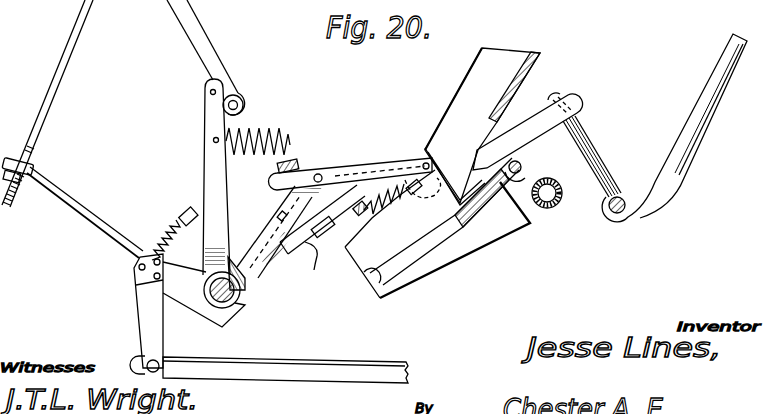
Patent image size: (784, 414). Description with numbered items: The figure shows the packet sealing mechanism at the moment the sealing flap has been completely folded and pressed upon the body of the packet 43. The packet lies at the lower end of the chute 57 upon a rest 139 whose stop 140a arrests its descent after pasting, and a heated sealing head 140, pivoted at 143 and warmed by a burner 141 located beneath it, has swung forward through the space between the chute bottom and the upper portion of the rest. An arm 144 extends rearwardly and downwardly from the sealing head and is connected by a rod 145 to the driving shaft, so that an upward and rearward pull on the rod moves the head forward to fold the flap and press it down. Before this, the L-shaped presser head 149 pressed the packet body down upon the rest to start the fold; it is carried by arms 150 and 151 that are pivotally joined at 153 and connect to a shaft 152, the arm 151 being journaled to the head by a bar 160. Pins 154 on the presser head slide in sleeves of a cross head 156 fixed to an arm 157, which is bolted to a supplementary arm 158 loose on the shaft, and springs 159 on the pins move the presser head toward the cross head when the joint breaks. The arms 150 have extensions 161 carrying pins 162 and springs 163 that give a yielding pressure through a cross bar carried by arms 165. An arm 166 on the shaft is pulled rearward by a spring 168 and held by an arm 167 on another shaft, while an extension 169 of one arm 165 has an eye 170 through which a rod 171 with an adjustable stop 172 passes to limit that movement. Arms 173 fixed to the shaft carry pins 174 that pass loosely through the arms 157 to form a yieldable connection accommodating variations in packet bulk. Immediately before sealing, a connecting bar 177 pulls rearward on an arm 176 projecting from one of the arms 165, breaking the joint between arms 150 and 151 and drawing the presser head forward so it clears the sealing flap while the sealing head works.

The packet 43 is at (440, 240).
The chute 57 is at (540, 56).
The rest 139 is at (470, 228).
The sealing head 140 is at (572, 100).
The stop 140a is at (360, 284).
The burner 141 is at (551, 208).
The pivot 143 is at (522, 166).
The arm 144 is at (592, 132).
The rod 145 is at (689, 129).
The presser head 149 is at (440, 128).
The arm 150 is at (286, 250).
The arm 151 is at (382, 160).
The shaft 152 is at (236, 302).
The pivotal connection 153 is at (318, 174).
The pin 154 is at (361, 216).
The cross head 156 is at (412, 195).
The arm 157 is at (348, 172).
The supplementary arm 158 is at (255, 237).
The spring 159 is at (390, 234).
The bar 160 is at (424, 146).
The extension 161 is at (178, 308).
The pin 162 is at (188, 212).
The spring 163 is at (167, 243).
The arm 165 is at (176, 270).
The arm 166 is at (212, 162).
The arm 167 is at (202, 60).
The spring 168 is at (268, 128).
The extension 169 is at (80, 203).
The eye 170 is at (10, 156).
The rod 171 is at (74, 35).
The adjustable stop 172 is at (23, 180).
The arm 173 is at (325, 263).
The pin 174 is at (269, 162).
The arm 176 is at (145, 318).
The connecting bar 177 is at (306, 384).